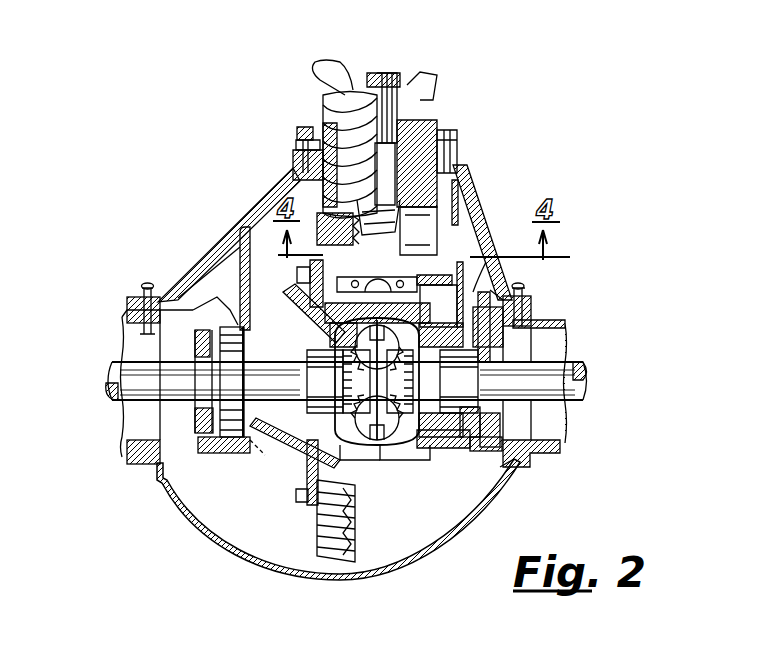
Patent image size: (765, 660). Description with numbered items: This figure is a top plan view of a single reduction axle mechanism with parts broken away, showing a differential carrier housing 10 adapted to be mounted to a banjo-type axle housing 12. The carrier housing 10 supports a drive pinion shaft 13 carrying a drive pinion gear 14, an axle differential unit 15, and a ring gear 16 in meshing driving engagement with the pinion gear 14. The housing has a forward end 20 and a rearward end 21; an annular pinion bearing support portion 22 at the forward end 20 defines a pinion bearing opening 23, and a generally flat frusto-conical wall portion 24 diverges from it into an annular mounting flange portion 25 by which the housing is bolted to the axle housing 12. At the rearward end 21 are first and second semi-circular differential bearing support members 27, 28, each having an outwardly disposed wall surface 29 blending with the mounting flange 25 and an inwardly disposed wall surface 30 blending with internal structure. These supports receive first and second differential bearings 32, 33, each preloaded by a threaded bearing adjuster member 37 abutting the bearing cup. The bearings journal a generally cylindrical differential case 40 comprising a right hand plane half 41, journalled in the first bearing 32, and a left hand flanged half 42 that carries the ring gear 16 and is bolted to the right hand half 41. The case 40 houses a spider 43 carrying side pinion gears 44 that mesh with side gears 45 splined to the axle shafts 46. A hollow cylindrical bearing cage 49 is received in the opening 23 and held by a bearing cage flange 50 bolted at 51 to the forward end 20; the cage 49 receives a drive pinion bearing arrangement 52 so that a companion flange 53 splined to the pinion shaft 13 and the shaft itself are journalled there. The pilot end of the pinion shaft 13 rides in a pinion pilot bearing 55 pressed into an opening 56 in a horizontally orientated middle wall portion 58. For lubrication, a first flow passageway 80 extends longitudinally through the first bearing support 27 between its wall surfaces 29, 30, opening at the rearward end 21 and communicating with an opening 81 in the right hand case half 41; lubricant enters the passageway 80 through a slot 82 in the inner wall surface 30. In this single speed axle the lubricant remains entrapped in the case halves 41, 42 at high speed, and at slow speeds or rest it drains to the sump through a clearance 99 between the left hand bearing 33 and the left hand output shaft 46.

The differential carrier housing 10 is at (496, 197).
The axle housing 12 is at (468, 527).
The drive pinion shaft 13 is at (392, 230).
The drive pinion gear 14 is at (420, 228).
The axle differential unit 15 is at (398, 480).
The ring gear 16 is at (358, 545).
The forward end 20 is at (297, 134).
The rearward end 21 is at (235, 458).
The annular pinion bearing support portion 22 is at (297, 146).
The pinion bearing opening 23 is at (295, 168).
The frusto-conical wall portion 24 is at (500, 268).
The annular mounting flange portion 25 is at (140, 290).
The first differential bearing support member 27 is at (500, 462).
The second differential bearing support member 28 is at (228, 320).
The outwardly disposed wall surface 29 is at (197, 330).
The inwardly disposed wall surface 30 is at (240, 330).
The first differential bearing 32 is at (505, 430).
The second differential bearing 33 is at (205, 405).
The threaded bearing adjuster member 37 is at (205, 366).
The differential case 40 is at (400, 268).
The right hand plane half 41 is at (410, 458).
The left hand flanged half 42 is at (350, 455).
The spider 43 is at (360, 340).
The side pinion gears 44 is at (352, 418).
The side gears 45 is at (305, 380).
The axle shafts 46 is at (108, 374).
The bearing cage 49 is at (340, 128).
The bearing cage flange 50 is at (325, 130).
The bolts 51 is at (462, 140).
The drive pinion bearing arrangement 52 is at (366, 95).
The companion flange 53 is at (437, 72).
The pinion pilot bearing 55 is at (352, 268).
The pilot bearing opening 56 is at (352, 268).
The middle wall portion 58 is at (455, 275).
The first flow passageway 80 is at (441, 381).
The opening 81 is at (438, 325).
The slot 82 is at (484, 263).
The clearance 99 is at (265, 455).